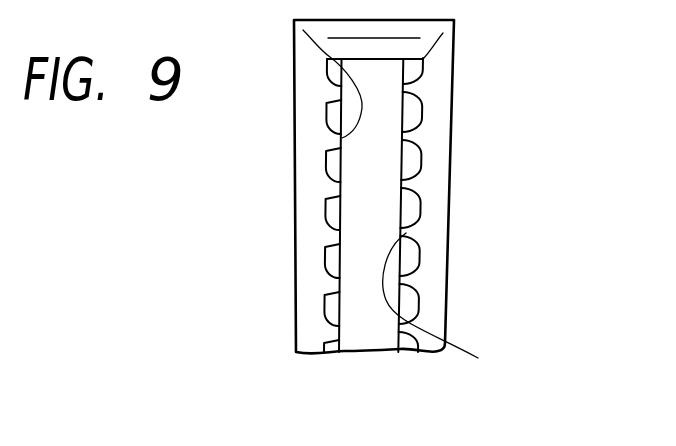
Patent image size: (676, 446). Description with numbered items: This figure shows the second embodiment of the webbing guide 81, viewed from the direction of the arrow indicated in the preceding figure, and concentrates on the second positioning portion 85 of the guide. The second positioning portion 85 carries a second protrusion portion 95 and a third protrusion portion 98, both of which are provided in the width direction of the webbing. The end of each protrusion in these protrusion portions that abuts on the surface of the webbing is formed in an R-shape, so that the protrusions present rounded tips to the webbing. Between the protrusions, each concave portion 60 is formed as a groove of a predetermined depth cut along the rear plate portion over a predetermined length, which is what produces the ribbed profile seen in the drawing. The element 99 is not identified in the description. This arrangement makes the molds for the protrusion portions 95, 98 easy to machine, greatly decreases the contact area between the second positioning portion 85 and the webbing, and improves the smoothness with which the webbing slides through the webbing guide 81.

The webbing guide 81 is at (452, 213).
The second positioning portion 85 is at (455, 85).
The concave portion 60 is at (325, 268).
The third protrusion portion 98 is at (325, 50).
The central bore 99 is at (355, 205).
The second protrusion portion 95 is at (445, 305).